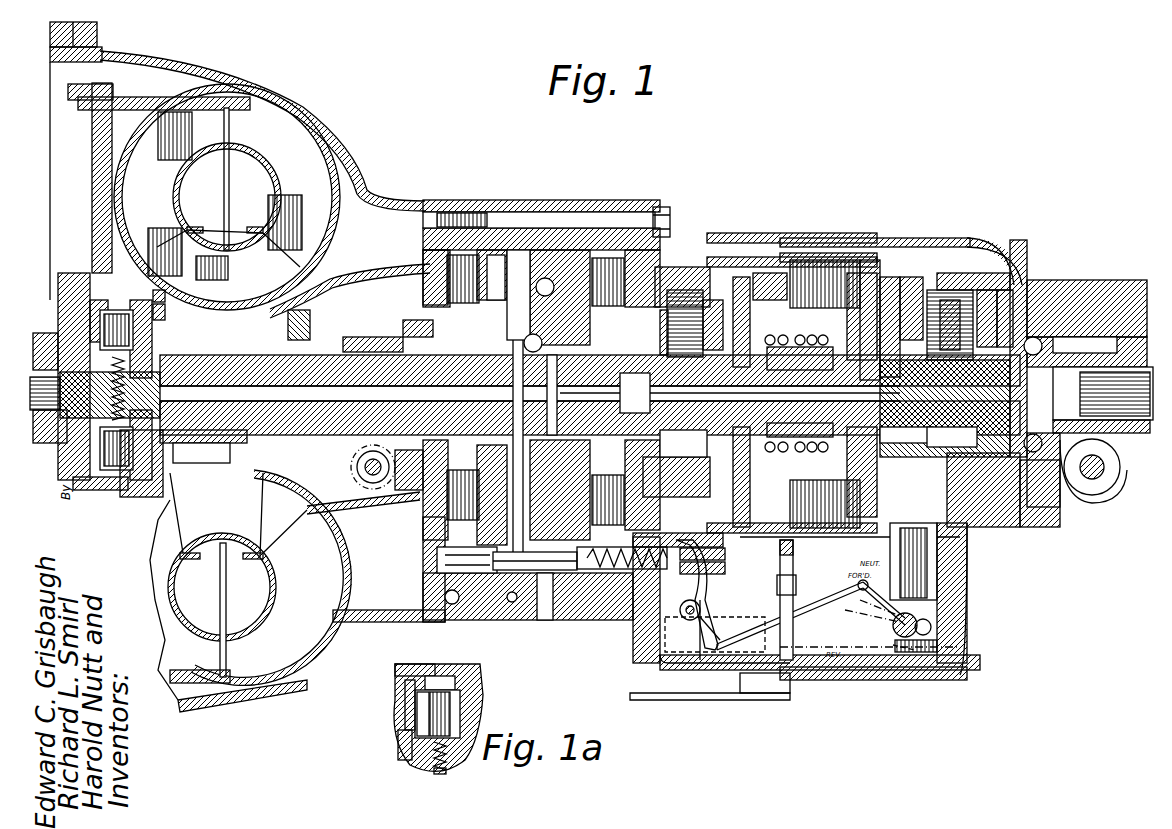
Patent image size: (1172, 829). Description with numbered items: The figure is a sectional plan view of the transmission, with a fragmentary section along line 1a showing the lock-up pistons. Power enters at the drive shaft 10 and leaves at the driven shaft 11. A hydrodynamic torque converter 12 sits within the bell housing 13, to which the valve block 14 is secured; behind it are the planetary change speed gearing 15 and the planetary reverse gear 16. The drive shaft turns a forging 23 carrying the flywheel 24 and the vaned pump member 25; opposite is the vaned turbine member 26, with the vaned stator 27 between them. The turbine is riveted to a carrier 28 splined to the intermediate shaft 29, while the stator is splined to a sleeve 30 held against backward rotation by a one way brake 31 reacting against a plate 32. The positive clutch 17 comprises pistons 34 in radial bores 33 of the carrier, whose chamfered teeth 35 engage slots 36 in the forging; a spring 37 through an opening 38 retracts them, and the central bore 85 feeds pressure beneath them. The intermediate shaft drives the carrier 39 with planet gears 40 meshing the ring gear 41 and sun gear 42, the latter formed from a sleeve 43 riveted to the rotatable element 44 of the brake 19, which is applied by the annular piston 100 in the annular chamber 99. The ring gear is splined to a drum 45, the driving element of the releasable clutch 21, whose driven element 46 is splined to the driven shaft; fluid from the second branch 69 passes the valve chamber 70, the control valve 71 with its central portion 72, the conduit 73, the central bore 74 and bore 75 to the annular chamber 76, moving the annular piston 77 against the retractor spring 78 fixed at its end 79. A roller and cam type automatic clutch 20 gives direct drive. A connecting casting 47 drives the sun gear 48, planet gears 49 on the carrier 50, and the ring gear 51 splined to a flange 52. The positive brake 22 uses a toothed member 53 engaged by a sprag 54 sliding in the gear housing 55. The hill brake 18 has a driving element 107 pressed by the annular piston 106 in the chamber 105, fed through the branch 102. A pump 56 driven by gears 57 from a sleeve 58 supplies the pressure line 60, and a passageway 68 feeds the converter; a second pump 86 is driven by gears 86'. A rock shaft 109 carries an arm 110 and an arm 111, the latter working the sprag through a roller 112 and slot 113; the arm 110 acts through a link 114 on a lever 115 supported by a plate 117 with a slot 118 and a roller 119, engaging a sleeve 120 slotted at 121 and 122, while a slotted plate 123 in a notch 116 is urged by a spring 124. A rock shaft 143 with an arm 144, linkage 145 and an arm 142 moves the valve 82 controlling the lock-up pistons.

In FIG. 1, the drive shaft 10 is at (45, 353).
In FIG. 1, the driven shaft 11 is at (1140, 365).
In FIG. 1, the hydrodynamic torque converter 12 is at (284, 148).
In FIG. 1, the bell housing 13 is at (300, 76).
In FIG. 1, the valve block 14 is at (556, 192).
In FIG. 1, the planetary change speed gearing 15 is at (700, 285).
In FIG. 1, the planetary reverse gear 16 is at (957, 282).
In FIG. 1, the positive clutch 17 is at (40, 280).
In FIG. 1A, the positive clutch 17 is at (455, 712).
In FIG. 1, the hill brake 18 is at (466, 245).
In FIG. 1, the brake 19 is at (611, 248).
In FIG. 1, the roller and cam type automatic clutch 20 is at (635, 393).
In FIG. 1, the releasable clutch 21 is at (840, 252).
In FIG. 1, the positive brake 22 is at (917, 272).
In FIG. 1, the forging 23 is at (80, 258).
In FIG. 1A, the forging 23 is at (475, 672).
In FIG. 1, the flywheel 24 is at (92, 140).
In FIG. 1, the vaned pump member 25 is at (250, 108).
In FIG. 1, the vaned turbine member 26 is at (160, 135).
In FIG. 1, the vaned stator 27 is at (240, 232).
In FIG. 1, the carrier 28 is at (62, 315).
In FIG. 1A, the carrier 28 is at (412, 705).
In FIG. 1, the intermediate shaft 29 is at (30, 400).
In FIG. 1A, the intermediate shaft 29 is at (450, 770).
In FIG. 1, the sleeve 30 is at (240, 478).
In FIG. 1, the one way brake 31 is at (415, 325).
In FIG. 1, the plate 32 is at (430, 290).
In FIG. 1, the radial bores 33 is at (65, 335).
In FIG. 1, the pistons 34 is at (160, 330).
In FIG. 1A, the pistons 34 is at (420, 732).
In FIG. 1, the chamfered teeth 35 is at (166, 312).
In FIG. 1A, the chamfered teeth 35 is at (415, 717).
In FIG. 1, the slots 36 is at (162, 300).
In FIG. 1A, the slots 36 is at (432, 668).
In FIG. 1, the spring 37 is at (32, 388).
In FIG. 1A, the spring 37 is at (440, 772).
In FIG. 1, the opening 38 is at (180, 448).
In FIG. 1A, the opening 38 is at (400, 752).
In FIG. 1, the carrier 39 is at (755, 258).
In FIG. 1, the planet gears 40 is at (694, 280).
In FIG. 1, the ring gear 41 is at (720, 255).
In FIG. 1, the sun gear 42 is at (690, 440).
In FIG. 1, the sleeve 43 is at (676, 475).
In FIG. 1, the rotatable element 44 is at (650, 320).
In FIG. 1, the drum 45 is at (790, 240).
In FIG. 1, the driven element 46 is at (855, 315).
In FIG. 1, the connecting casting 47 is at (890, 278).
In FIG. 1, the sun gear 48 is at (955, 420).
In FIG. 1, the planet gears 49 is at (985, 295).
In FIG. 1, the carrier 50 is at (995, 310).
In FIG. 1, the ring gear 51 is at (965, 273).
In FIG. 1, the flange 52 is at (1015, 300).
In FIG. 1, the toothed member 53 is at (935, 290).
In FIG. 1, the sprag 54 is at (937, 575).
In FIG. 1, the gear housing 55 is at (967, 610).
In FIG. 1, the pump 56 is at (389, 510).
In FIG. 1, the gears 57 is at (375, 340).
In FIG. 1, the sleeve 58 is at (365, 482).
In FIG. 1, the pressure line 60 is at (452, 605).
In FIG. 1, the passageway 68 is at (297, 320).
In FIG. 1, the second branch 69 is at (440, 600).
In FIG. 1, the valve chamber 70 is at (546, 596).
In FIG. 1, the control valve 71 is at (437, 560).
In FIG. 1, the central portion 72 is at (500, 558).
In FIG. 1, the conduit 73 is at (516, 478).
In FIG. 1, the central bore 74 is at (590, 393).
In FIG. 1, the bore 75 is at (775, 393).
In FIG. 1, the annular chamber 76 is at (774, 457).
In FIG. 1, the annular piston 77 is at (775, 330).
In FIG. 1, the retractor spring 78 is at (800, 447).
In FIG. 1, the end 79 is at (820, 337).
In FIG. 1, the valve 82 is at (793, 563).
In FIG. 1, the central bore 85 is at (590, 395).
In FIG. 1, the pump 86 is at (1042, 486).
In FIG. 1, the gears 86' is at (1085, 366).
In FIG. 1, the annular chamber 99 is at (544, 315).
In FIG. 1, the annular piston 100 is at (546, 222).
In FIG. 1, the branch 102 is at (512, 603).
In FIG. 1, the chamber 105 is at (520, 258).
In FIG. 1, the annular piston 106 is at (492, 258).
In FIG. 1, the driving element 107 is at (425, 480).
In FIG. 1, the rock shaft 109 is at (895, 645).
In FIG. 1, the arm 110 is at (882, 623).
In FIG. 1, the arm 111 is at (962, 628).
In FIG. 1, the roller 112 is at (968, 645).
In FIG. 1, the slot 113 is at (915, 650).
In FIG. 1, the link 114 is at (832, 617).
In FIG. 1, the lever 115 is at (712, 630).
In FIG. 1, the notch 116 is at (702, 595).
In FIG. 1, the plate 117 is at (692, 640).
In FIG. 1, the slot 118 is at (740, 617).
In FIG. 1, the roller 119 is at (700, 640).
In FIG. 1, the sleeve 120 is at (724, 578).
In FIG. 1, the slot 121 is at (668, 546).
In FIG. 1, the slot 122 is at (686, 606).
In FIG. 1, the slotted plate 123 is at (722, 565).
In FIG. 1, the spring 124 is at (612, 570).
In FIG. 1, the arm 142 is at (792, 540).
In FIG. 1, the rock shaft 143 is at (796, 595).
In FIG. 1, the arm 144 is at (762, 700).
In FIG. 1, the linkage 145 is at (745, 700).
In FIG. 1, the section line 1a is at (127, 393).